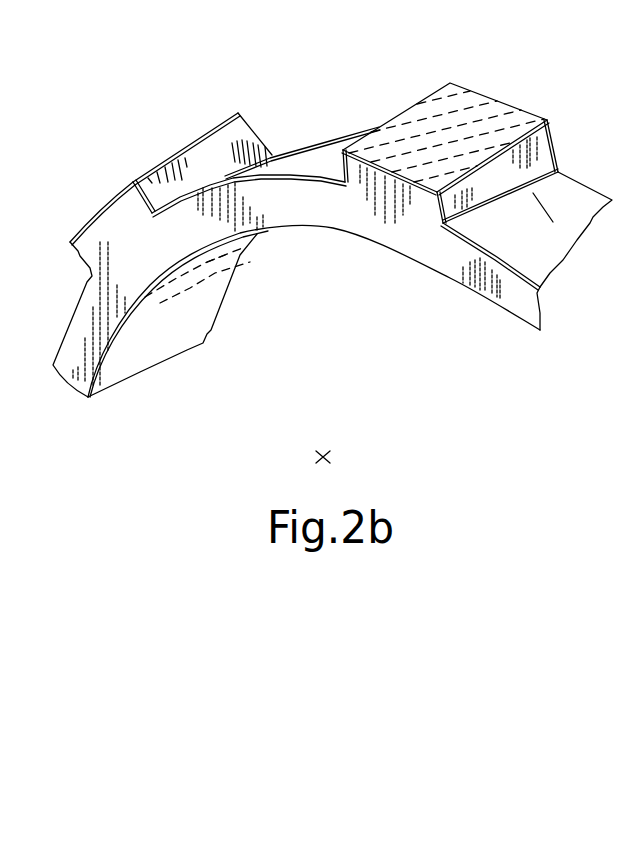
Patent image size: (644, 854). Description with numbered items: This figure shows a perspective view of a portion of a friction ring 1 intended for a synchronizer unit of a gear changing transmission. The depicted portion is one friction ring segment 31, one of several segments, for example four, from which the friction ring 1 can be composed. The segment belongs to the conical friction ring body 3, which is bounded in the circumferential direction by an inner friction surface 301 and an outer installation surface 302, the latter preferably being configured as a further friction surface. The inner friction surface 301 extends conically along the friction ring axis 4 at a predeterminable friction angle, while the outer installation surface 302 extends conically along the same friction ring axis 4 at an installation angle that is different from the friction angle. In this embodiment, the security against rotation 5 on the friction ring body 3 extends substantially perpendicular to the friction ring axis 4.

The friction ring 1 is at (332, 239).
The conical friction ring body 3 is at (154, 77).
The friction ring segment 31 is at (127, 260).
The security against rotation 5 is at (217, 143).
The inner friction surface 301 is at (215, 283).
The outer installation surface 302 is at (553, 222).
The friction ring axis 4 is at (330, 455).